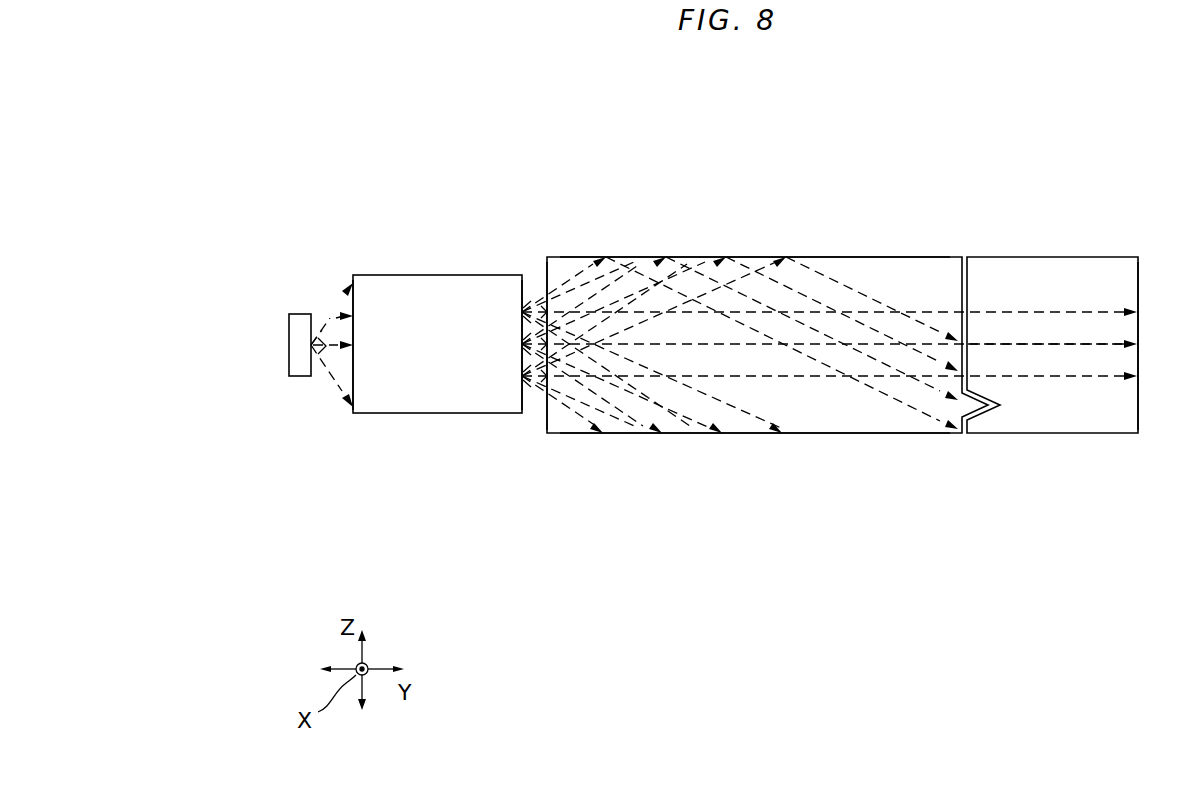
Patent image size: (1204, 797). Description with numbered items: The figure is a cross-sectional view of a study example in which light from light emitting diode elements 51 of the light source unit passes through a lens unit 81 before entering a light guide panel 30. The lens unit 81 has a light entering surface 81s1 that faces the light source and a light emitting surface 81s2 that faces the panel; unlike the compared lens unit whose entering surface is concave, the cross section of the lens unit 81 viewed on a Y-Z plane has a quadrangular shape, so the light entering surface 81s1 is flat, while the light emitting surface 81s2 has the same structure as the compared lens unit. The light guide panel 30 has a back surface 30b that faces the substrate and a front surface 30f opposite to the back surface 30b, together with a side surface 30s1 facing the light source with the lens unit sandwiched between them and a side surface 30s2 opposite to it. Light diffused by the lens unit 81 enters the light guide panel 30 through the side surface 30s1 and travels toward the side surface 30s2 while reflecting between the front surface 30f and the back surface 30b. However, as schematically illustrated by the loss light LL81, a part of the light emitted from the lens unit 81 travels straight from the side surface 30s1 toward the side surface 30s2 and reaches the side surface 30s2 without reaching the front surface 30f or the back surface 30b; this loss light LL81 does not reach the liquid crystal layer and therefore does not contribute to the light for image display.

The light emitting diode element 51 is at (289, 345).
The lens unit 81 is at (418, 302).
The light entering surface 81s1 is at (340, 313).
The light emitting surface 81s2 is at (525, 285).
The light guide panel 30 is at (920, 295).
The front surface 30f is at (645, 246).
The back surface 30b is at (838, 444).
The side surface 30s1 is at (538, 431).
The side surface 30s2 is at (1148, 414).
The loss light LL81 is at (1017, 345).